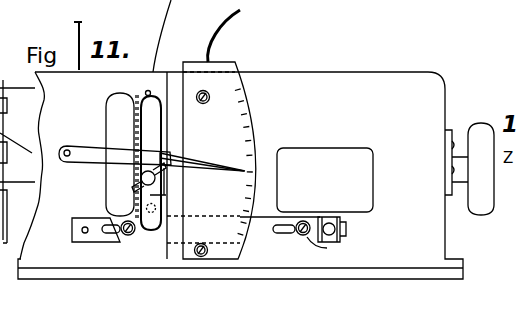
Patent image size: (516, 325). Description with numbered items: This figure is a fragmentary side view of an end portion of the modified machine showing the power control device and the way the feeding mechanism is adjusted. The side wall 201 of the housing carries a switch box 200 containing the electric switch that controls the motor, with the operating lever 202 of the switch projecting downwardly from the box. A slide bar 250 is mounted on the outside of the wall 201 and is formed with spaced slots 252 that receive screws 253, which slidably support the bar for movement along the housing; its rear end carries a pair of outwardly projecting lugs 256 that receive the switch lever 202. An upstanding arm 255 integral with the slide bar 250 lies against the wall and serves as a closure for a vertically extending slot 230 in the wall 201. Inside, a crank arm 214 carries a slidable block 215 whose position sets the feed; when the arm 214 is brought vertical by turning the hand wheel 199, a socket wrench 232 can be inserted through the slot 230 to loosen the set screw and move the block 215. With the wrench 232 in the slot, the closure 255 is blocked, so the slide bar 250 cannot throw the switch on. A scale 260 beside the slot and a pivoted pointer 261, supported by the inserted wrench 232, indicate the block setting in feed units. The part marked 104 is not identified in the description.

The wire 104 is at (213, 14).
The hand wheel 199 is at (480, 137).
The switch box 200 is at (325, 180).
The side wall 201 is at (344, 102).
The operating lever 202 is at (333, 219).
The crank arm 214 is at (150, 122).
The block 215 is at (170, 183).
The slot 230 is at (137, 148).
The socket wrench 232 is at (140, 168).
The slide bar 250 is at (253, 231).
The slots 252 is at (93, 242).
The screws 253 is at (125, 222).
The upstanding arm 255 is at (112, 127).
The lugs 256 is at (340, 230).
The scale 260 is at (202, 149).
The pointer 261 is at (228, 165).